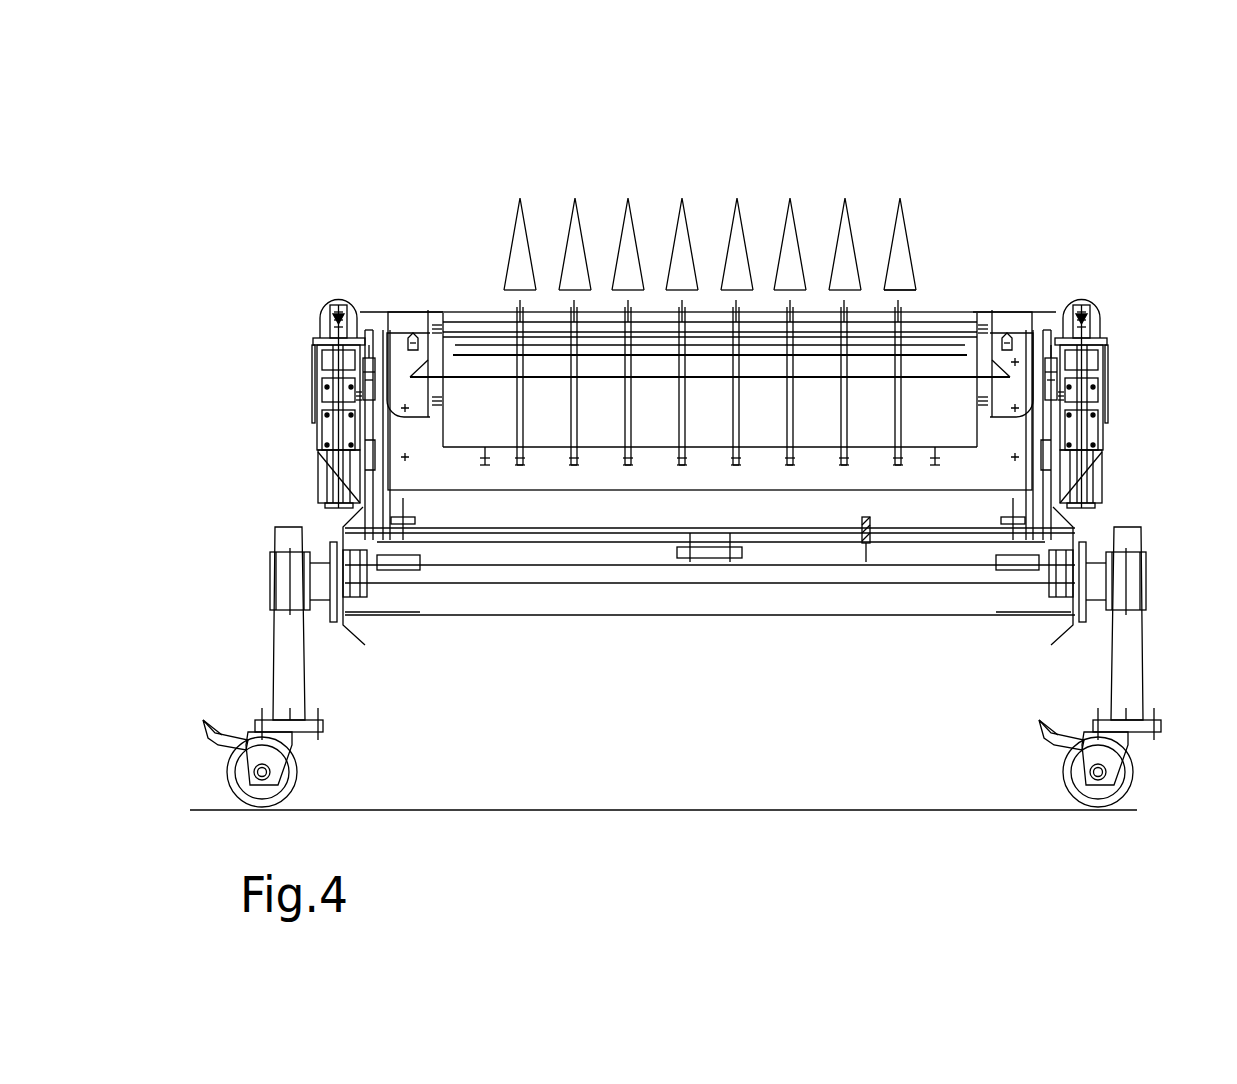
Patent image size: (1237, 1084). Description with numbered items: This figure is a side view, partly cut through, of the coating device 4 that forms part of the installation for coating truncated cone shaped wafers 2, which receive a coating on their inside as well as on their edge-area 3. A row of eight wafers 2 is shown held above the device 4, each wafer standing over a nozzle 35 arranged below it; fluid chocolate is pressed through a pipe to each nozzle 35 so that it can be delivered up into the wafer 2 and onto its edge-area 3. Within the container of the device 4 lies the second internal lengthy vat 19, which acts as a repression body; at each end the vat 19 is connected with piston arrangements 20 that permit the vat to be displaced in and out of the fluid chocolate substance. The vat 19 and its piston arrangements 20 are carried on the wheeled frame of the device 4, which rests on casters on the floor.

The truncated cone shaped wafer 2 is at (904, 240).
The edge-area 3 is at (900, 290).
The device 4 is at (1087, 213).
The second internal lengthy vat 19 is at (1002, 345).
The piston arrangements 20 is at (322, 385).
The nozzle 35 is at (518, 318).